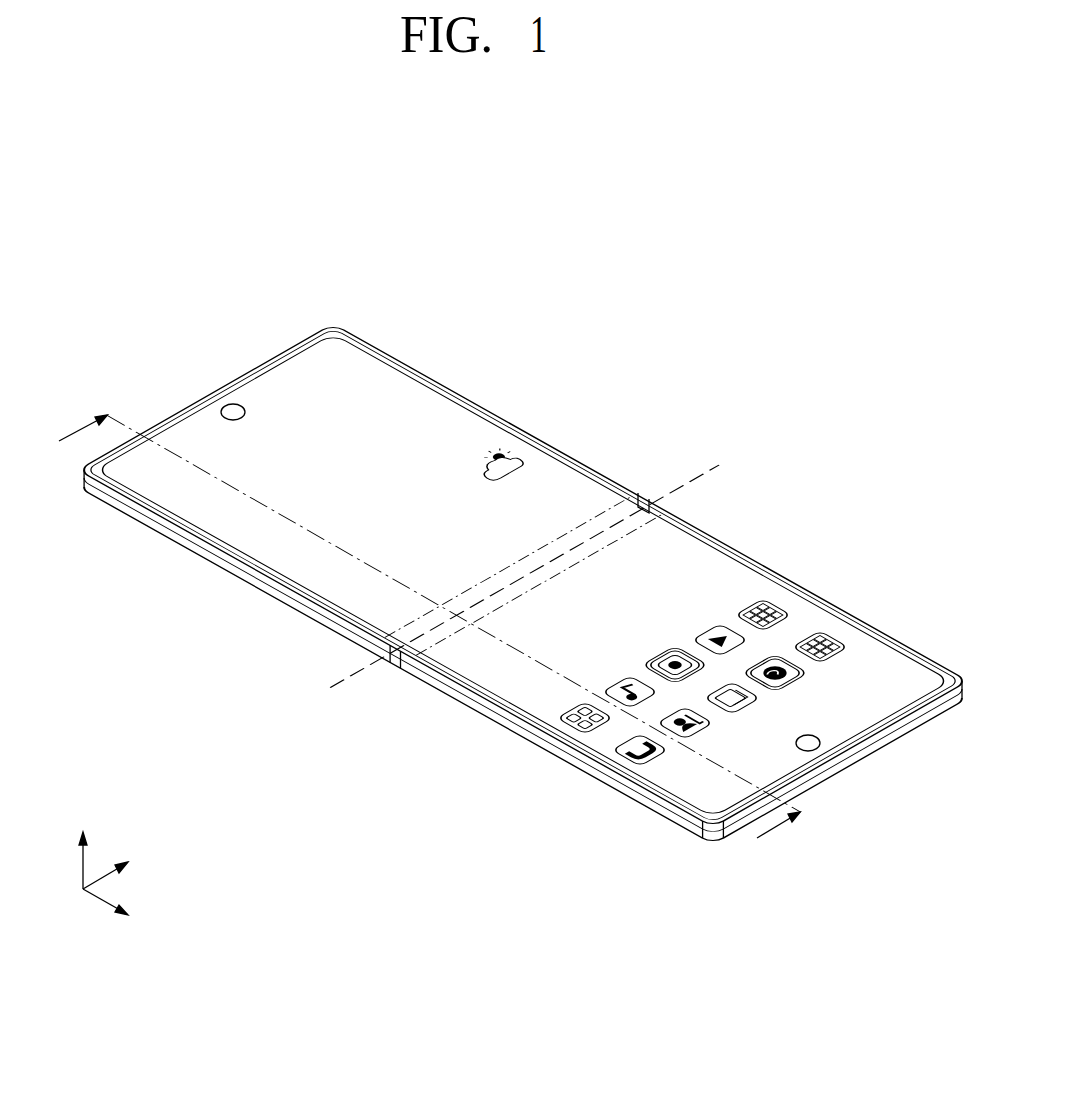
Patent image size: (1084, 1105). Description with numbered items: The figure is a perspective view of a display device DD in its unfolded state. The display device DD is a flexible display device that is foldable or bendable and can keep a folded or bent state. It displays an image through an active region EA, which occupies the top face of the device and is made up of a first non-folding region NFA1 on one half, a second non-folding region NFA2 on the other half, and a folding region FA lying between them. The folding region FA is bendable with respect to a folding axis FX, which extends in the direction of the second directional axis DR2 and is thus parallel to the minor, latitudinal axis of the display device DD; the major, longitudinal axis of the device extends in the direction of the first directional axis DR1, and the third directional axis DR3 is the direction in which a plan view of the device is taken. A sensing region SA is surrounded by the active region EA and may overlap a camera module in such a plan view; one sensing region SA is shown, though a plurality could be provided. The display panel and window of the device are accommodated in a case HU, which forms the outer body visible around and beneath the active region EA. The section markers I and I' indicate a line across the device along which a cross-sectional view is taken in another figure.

The display device DD is at (694, 316).
The case HU is at (832, 607).
The active region EA is at (533, 316).
The non-folding region NFA1 is at (484, 436).
The non-folding region NFA2 is at (727, 573).
The folding region FA is at (625, 508).
The folding axis FX is at (508, 584).
The sensing region SA is at (232, 402).
The section line I is at (425, 613).
The section line I' is at (770, 836).
The first directional axis DR1 is at (126, 908).
The second directional axis DR2 is at (126, 871).
The third directional axis DR3 is at (83, 847).